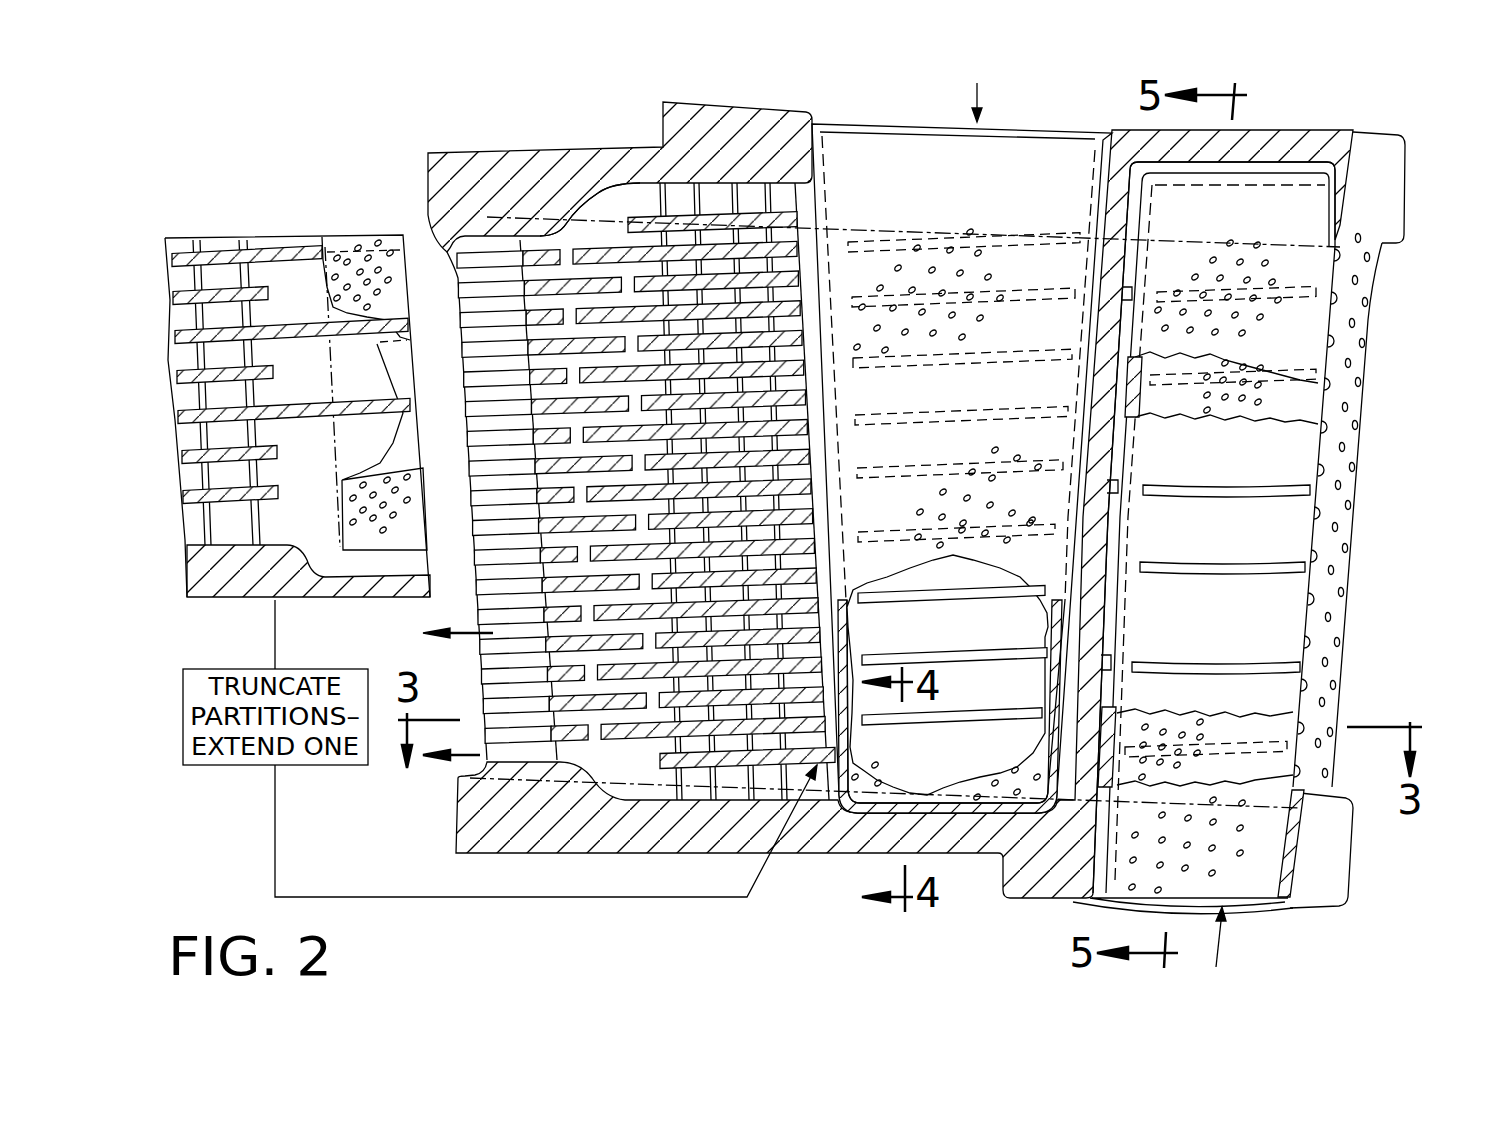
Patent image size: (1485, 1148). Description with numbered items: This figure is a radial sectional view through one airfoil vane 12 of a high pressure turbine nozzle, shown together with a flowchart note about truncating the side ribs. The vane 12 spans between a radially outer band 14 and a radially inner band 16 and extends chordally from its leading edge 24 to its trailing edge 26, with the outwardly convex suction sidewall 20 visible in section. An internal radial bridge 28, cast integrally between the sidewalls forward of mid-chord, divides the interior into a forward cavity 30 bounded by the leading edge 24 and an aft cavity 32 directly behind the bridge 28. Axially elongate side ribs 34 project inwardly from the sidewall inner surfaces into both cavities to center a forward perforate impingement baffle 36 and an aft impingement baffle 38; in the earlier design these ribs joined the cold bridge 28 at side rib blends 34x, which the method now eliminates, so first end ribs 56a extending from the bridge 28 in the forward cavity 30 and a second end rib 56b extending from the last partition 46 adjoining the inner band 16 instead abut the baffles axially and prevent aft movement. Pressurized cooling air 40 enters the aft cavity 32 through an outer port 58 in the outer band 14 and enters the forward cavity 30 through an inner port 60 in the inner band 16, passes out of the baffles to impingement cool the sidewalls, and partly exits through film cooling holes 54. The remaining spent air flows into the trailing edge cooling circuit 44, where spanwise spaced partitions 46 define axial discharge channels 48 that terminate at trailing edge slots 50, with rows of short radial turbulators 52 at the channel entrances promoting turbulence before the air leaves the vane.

The airfoil vane 12 is at (1385, 285).
The outer band 14 is at (1405, 155).
The inner band 16 is at (1352, 845).
The suction sidewall 20 is at (1367, 366).
The leading edge 24 is at (1322, 490).
The trailing edge 26 is at (447, 262).
The bridge 28 is at (1077, 768).
The forward cavity 30 is at (1267, 163).
The aft cavity 32 is at (863, 815).
The side rib 34 is at (947, 657).
The side rib blend 34x is at (323, 422).
The forward impingement baffle 36 is at (1257, 885).
The aft impingement baffle 38 is at (1043, 160).
The cooling air 40 is at (977, 86).
The trailing edge cooling circuit 44 is at (597, 200).
The partition 46 is at (545, 280).
The discharge channel 48 is at (610, 273).
The trailing edge slot 50 is at (487, 602).
The turbulator 52 is at (703, 207).
The film cooling hole 54 is at (1328, 617).
The first end rib 56a is at (1118, 487).
The second end rib 56b is at (857, 762).
The outer port 58 is at (825, 112).
The inner port 60 is at (1083, 897).